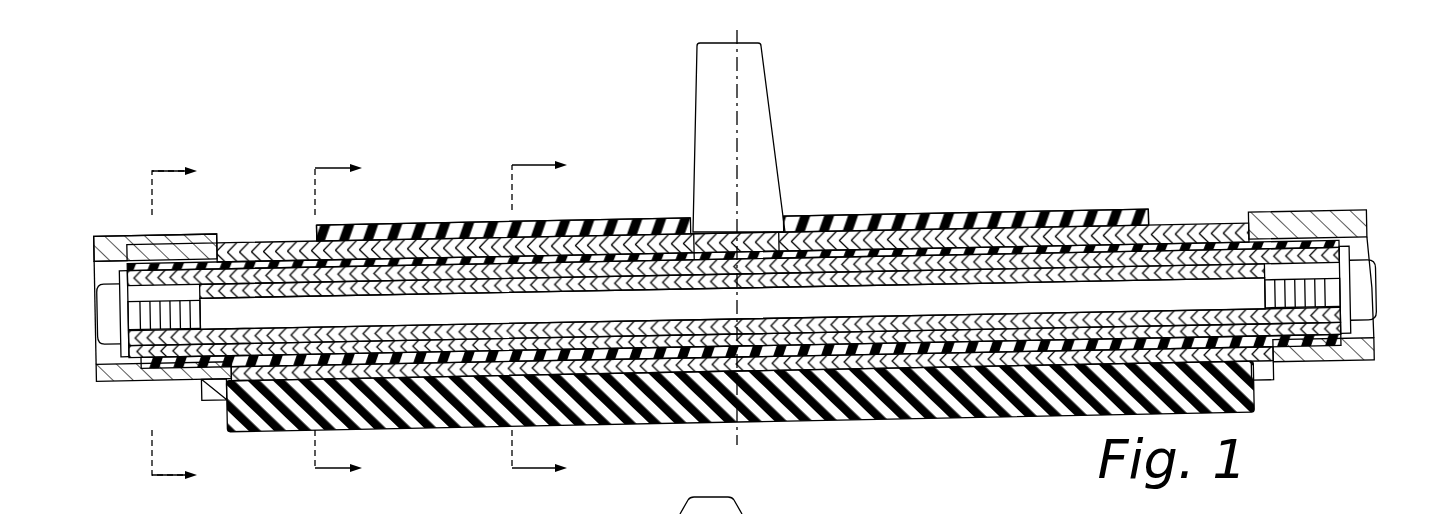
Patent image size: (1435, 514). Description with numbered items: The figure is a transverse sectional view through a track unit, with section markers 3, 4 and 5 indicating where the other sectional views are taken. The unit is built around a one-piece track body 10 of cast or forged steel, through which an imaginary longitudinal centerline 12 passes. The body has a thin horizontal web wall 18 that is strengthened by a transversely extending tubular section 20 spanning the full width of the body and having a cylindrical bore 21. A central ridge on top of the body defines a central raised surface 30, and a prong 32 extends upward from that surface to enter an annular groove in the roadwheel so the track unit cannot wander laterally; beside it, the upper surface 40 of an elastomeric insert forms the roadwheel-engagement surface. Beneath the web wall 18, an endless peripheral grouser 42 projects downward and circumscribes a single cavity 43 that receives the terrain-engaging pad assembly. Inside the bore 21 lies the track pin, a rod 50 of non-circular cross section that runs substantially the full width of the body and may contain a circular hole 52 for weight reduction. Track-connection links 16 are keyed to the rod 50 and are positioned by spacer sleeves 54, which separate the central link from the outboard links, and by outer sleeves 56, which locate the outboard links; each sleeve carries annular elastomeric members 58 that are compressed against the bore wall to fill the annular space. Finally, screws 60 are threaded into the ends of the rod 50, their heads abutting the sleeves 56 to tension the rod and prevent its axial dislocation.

The track body 10 is at (220, 238).
The longitudinal centerline 12 is at (737, 127).
The track-connection link 16 is at (372, 352).
The web wall 18 is at (740, 396).
The tubular section 20 is at (460, 226).
The cylindrical bore 21 is at (1372, 242).
The central raised surface 30 is at (756, 228).
The prong 32 is at (768, 68).
The upper surface of elastomeric insert 40 is at (636, 225).
The peripheral grouser 42 is at (212, 392).
The cavity 43 is at (1258, 362).
The rod 50 is at (975, 272).
The circular hole 52 is at (612, 325).
The spacer sleeve 54 is at (510, 330).
The sleeve 56 is at (170, 366).
The annular elastomeric member 58 is at (178, 262).
The screw 60 is at (115, 342).
The section line 3 is at (551, 300).
The section line 4 is at (350, 300).
The section line 5 is at (178, 317).